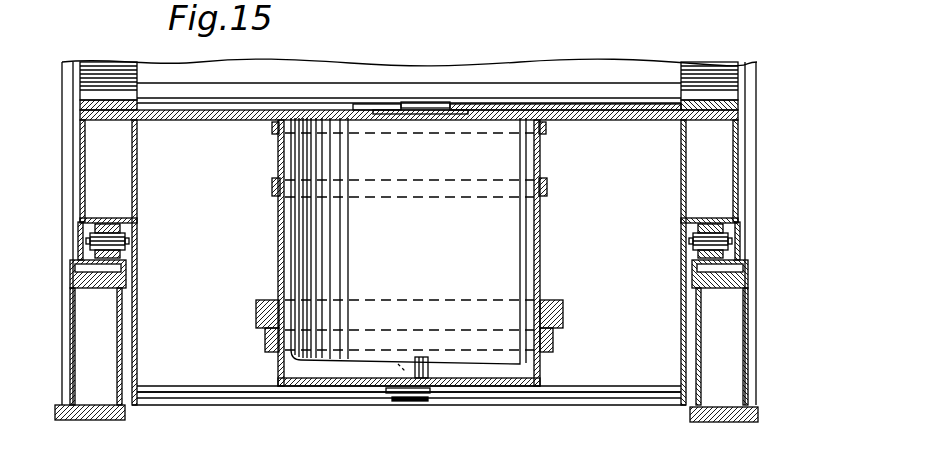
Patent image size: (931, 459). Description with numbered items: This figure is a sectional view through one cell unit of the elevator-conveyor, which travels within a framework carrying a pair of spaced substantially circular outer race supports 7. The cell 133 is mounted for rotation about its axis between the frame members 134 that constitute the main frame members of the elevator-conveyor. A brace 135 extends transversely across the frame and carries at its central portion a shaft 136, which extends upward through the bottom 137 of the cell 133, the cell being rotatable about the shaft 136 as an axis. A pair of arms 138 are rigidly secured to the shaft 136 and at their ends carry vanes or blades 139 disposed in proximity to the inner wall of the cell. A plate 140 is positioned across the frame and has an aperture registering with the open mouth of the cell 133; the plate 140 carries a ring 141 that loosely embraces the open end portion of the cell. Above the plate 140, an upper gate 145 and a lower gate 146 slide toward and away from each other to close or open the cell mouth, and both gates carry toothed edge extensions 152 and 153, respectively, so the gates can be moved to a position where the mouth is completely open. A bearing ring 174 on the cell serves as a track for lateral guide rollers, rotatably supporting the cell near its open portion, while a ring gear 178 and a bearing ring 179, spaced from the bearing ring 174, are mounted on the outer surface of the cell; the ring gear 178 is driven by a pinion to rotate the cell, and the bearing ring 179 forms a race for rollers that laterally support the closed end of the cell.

The outer race support 7 is at (72, 329).
The cell 133 is at (540, 223).
The frame member 134 is at (80, 181).
The brace 135 is at (499, 395).
The shaft 136 is at (392, 378).
The bottom 137 is at (343, 379).
The arm 138 is at (452, 365).
The vane 139 is at (290, 260).
The plate 140 is at (206, 121).
The ring 141 is at (548, 128).
The upper gate 145 is at (518, 108).
The lower gate 146 is at (325, 110).
The edge extension 152 is at (422, 104).
The edge extension 153 is at (396, 113).
The bearing ring 174 is at (549, 192).
The ring gear 178 is at (563, 313).
The bearing ring 179 is at (553, 343).